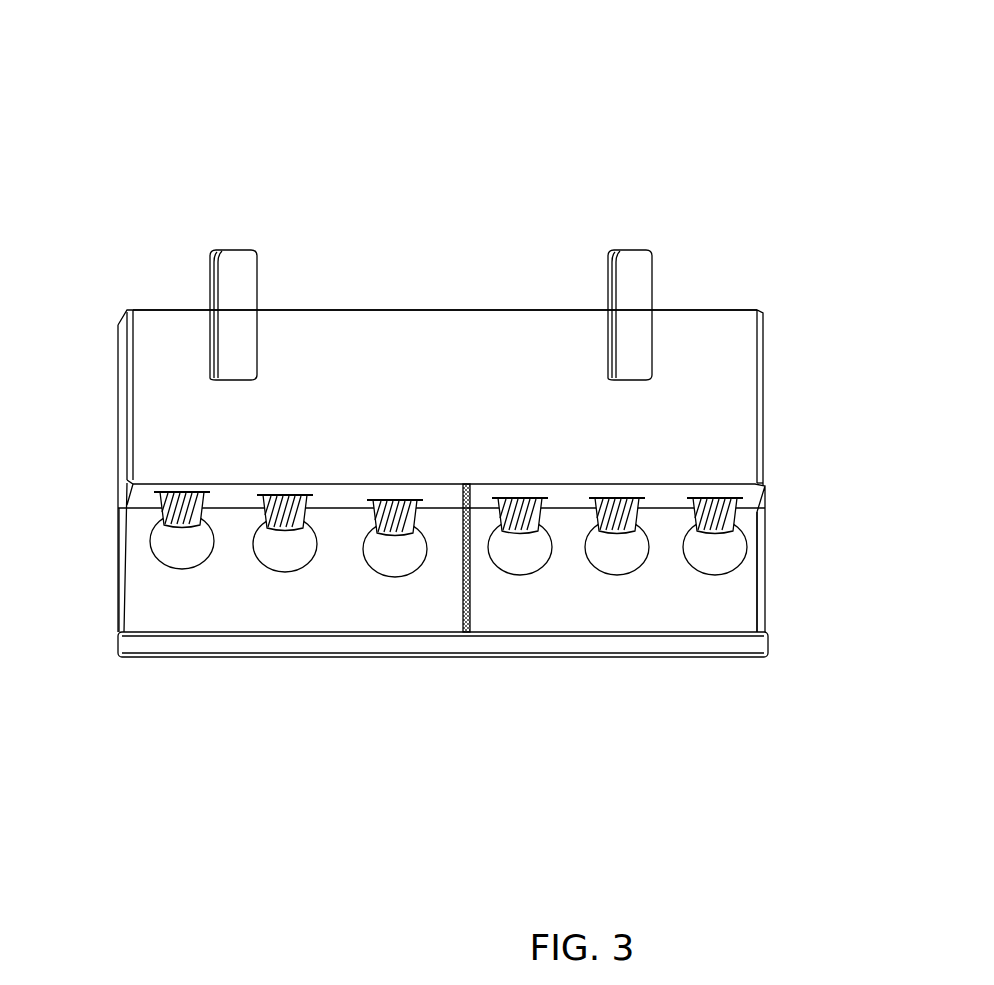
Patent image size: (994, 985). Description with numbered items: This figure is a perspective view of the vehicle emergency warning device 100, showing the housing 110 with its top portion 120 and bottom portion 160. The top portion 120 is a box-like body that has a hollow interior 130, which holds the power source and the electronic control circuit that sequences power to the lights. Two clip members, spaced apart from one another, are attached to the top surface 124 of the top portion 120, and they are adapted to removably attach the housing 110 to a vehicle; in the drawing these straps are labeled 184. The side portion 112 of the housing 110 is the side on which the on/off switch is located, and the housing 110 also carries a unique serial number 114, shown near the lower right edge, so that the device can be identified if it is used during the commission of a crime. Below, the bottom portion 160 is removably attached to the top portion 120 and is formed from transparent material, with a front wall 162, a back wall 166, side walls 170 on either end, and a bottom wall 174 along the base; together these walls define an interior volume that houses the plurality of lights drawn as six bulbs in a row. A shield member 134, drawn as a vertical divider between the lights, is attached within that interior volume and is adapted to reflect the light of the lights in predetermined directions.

The vehicle emergency warning device 100 is at (660, 100).
The housing 110 is at (718, 305).
The side portion 112 is at (767, 383).
The unique serial number 114 is at (742, 475).
The top portion 120 is at (118, 352).
The top surface 124 is at (487, 305).
The hollow interior 130 is at (343, 335).
The shield member 134 is at (474, 578).
The bottom portion 160 is at (120, 525).
The front wall 162 is at (247, 605).
The back wall 166 is at (452, 660).
The side walls 170 is at (118, 580).
The bottom wall 174 is at (587, 641).
The hanging straps 184 is at (238, 247).